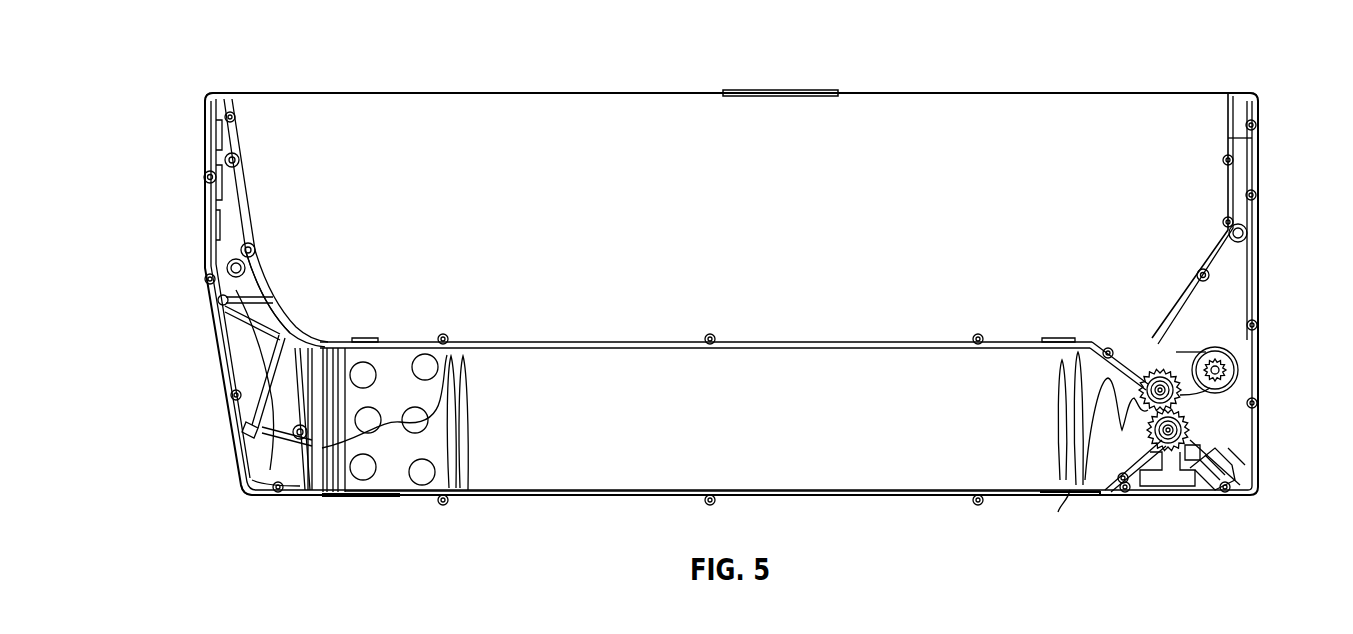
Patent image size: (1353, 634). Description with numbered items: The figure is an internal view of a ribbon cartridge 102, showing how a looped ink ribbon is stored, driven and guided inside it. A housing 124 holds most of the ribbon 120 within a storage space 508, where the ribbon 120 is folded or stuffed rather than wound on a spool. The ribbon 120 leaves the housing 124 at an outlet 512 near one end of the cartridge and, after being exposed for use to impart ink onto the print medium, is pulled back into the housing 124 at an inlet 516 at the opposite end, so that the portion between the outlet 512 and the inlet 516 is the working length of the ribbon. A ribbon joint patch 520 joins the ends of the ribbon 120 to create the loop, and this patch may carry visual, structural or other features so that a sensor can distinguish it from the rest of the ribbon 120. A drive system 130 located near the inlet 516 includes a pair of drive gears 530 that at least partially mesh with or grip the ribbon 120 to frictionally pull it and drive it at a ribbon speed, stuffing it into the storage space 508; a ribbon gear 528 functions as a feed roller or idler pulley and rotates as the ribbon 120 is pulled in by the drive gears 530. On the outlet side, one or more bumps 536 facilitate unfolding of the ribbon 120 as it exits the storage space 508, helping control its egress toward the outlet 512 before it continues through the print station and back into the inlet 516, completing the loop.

The ribbon cartridge 102 is at (243, 470).
The ribbon 120 is at (463, 92).
The housing 124 is at (272, 272).
The drive system 130 is at (1245, 441).
The storage space 508 is at (577, 364).
The outlet 512 is at (232, 78).
The inlet 516 is at (1226, 78).
The ribbon joint patch 520 is at (778, 90).
The ribbon gear 528 is at (1217, 370).
The drive gears 530 is at (1160, 390).
The bumps 536 is at (363, 378).